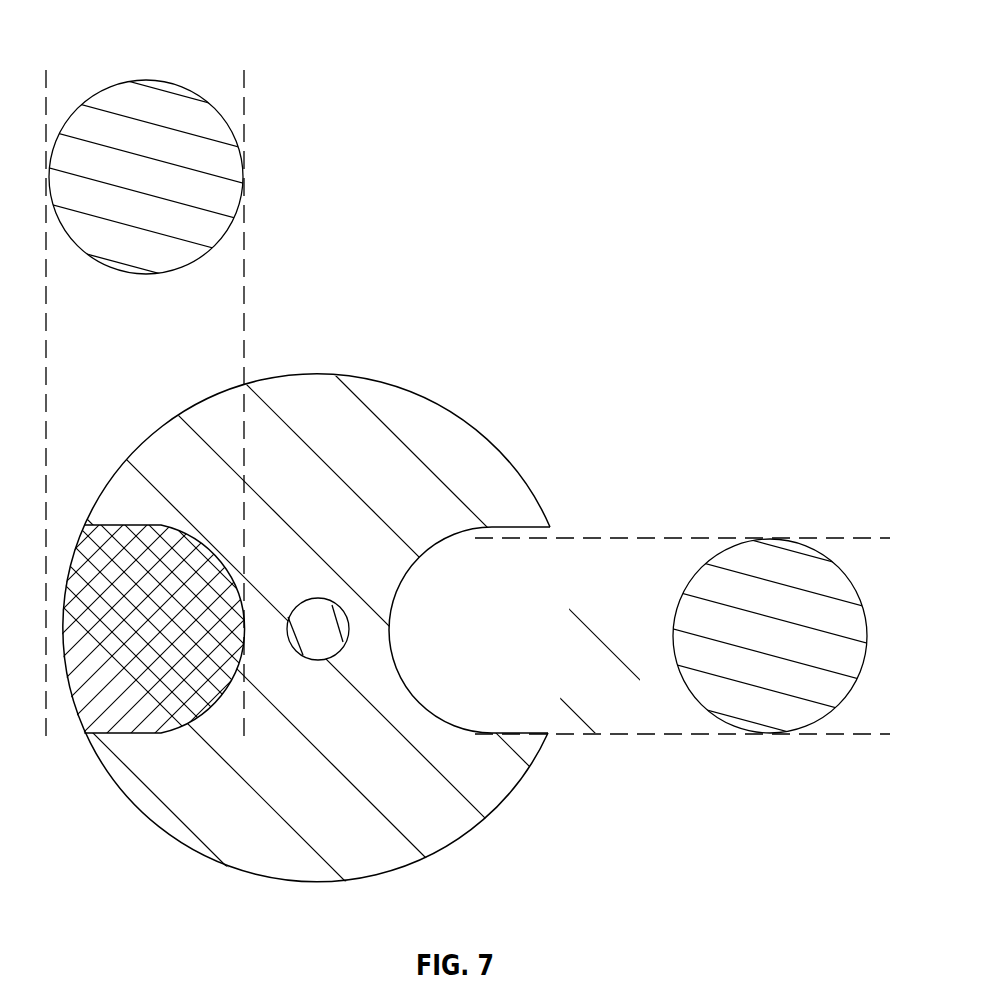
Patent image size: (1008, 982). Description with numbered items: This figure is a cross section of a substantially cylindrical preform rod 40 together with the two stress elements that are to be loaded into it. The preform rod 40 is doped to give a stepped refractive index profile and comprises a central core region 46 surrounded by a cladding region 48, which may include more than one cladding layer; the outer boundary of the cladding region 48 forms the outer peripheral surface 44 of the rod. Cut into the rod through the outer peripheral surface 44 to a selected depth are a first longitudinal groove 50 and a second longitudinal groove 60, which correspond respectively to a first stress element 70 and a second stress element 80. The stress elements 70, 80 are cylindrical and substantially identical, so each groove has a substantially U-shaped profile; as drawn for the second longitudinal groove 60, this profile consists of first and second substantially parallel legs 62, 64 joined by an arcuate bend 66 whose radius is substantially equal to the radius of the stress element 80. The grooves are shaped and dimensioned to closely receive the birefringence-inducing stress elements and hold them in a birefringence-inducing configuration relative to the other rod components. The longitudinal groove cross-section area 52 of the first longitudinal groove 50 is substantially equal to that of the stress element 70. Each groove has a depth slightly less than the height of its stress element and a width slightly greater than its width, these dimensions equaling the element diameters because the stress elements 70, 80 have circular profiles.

The preform rod 40 is at (450, 511).
The outer peripheral surface 44 is at (436, 395).
The core region 46 is at (318, 629).
The cladding region 48 is at (450, 511).
The first longitudinal groove 50 is at (158, 730).
The longitudinal groove cross-section area 52 is at (142, 645).
The second longitudinal groove 60 is at (488, 625).
The first leg 62 is at (522, 525).
The second leg 64 is at (517, 735).
The arcuate bend 66 is at (402, 675).
The first stress element 70 is at (143, 55).
The second stress element 80 is at (781, 513).